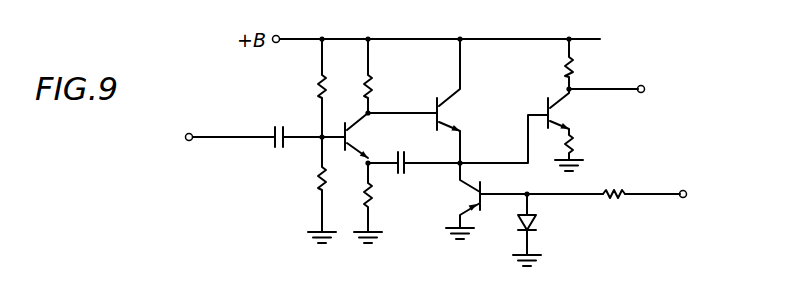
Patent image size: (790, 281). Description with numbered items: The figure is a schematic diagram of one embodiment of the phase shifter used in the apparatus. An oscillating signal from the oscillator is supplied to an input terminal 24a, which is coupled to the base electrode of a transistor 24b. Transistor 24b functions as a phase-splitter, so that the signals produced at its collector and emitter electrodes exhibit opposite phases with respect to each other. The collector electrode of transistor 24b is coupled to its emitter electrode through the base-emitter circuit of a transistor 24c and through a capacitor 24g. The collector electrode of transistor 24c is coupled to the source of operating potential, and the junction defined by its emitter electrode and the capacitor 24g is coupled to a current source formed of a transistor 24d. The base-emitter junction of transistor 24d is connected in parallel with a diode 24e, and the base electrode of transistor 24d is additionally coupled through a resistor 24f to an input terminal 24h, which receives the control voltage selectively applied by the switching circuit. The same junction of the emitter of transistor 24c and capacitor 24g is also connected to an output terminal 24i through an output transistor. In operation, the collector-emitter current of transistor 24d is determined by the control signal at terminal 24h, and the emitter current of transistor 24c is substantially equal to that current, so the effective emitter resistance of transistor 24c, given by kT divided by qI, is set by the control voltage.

The input terminal 24a is at (189, 141).
The transistor 24b is at (365, 123).
The transistor 24c is at (450, 120).
The transistor 24d is at (462, 204).
The diode 24e is at (536, 222).
The resistor 24f is at (611, 199).
The capacitor 24g is at (400, 175).
The input terminal 24h is at (683, 198).
The output terminal 24i is at (641, 93).